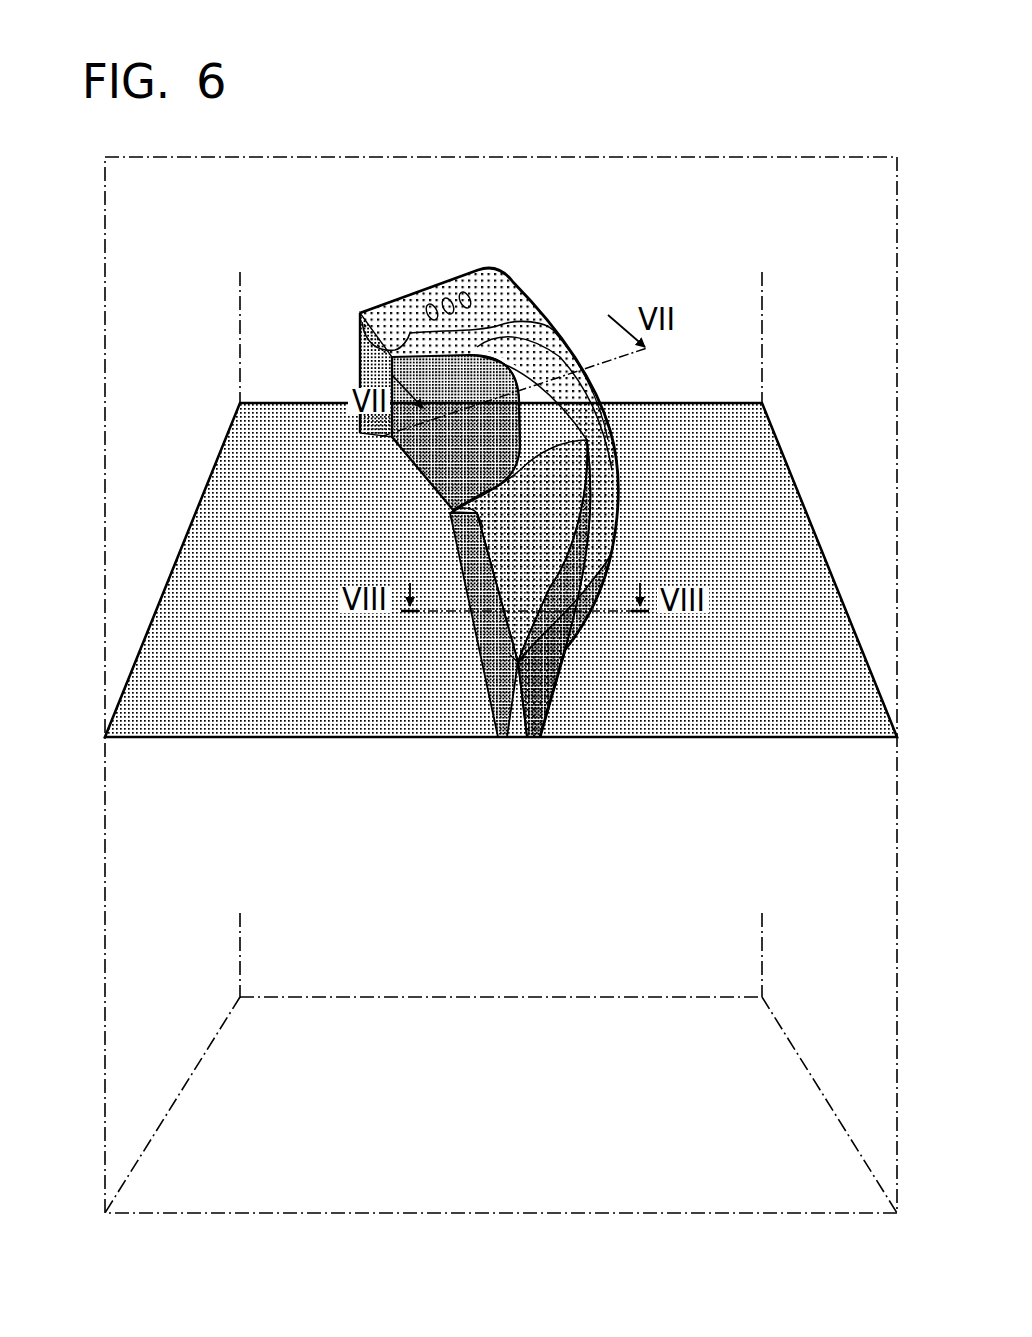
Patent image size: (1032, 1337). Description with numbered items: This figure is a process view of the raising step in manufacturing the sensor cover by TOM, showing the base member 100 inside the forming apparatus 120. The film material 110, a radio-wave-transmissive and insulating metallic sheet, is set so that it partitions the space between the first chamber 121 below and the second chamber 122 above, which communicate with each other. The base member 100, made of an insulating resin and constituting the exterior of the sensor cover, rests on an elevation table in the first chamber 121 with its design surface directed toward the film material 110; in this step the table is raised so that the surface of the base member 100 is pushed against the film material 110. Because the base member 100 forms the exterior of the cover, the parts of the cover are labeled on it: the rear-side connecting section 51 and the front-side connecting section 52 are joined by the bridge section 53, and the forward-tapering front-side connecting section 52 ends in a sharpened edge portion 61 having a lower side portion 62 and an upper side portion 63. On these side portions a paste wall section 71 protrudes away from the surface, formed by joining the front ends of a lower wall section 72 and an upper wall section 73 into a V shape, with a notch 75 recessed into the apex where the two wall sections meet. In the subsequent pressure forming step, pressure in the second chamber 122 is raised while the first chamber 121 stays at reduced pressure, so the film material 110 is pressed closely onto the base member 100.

The forming apparatus 120 is at (807, 107).
The second chamber 122 is at (105, 360).
The first chamber 121 is at (105, 838).
The film material 110 is at (703, 427).
The base member 100 is at (607, 548).
The rear-side connecting section 51 is at (392, 350).
The front-side connecting section 52 is at (475, 505).
The bridge section 53 is at (512, 410).
The edge portion 61 is at (517, 604).
The lower side portion 62 is at (458, 598).
The upper side portion 63 is at (557, 623).
The paste wall section 71 is at (548, 656).
The lower wall section 72 is at (516, 663).
The upper wall section 73 is at (535, 665).
The notch 75 is at (518, 664).